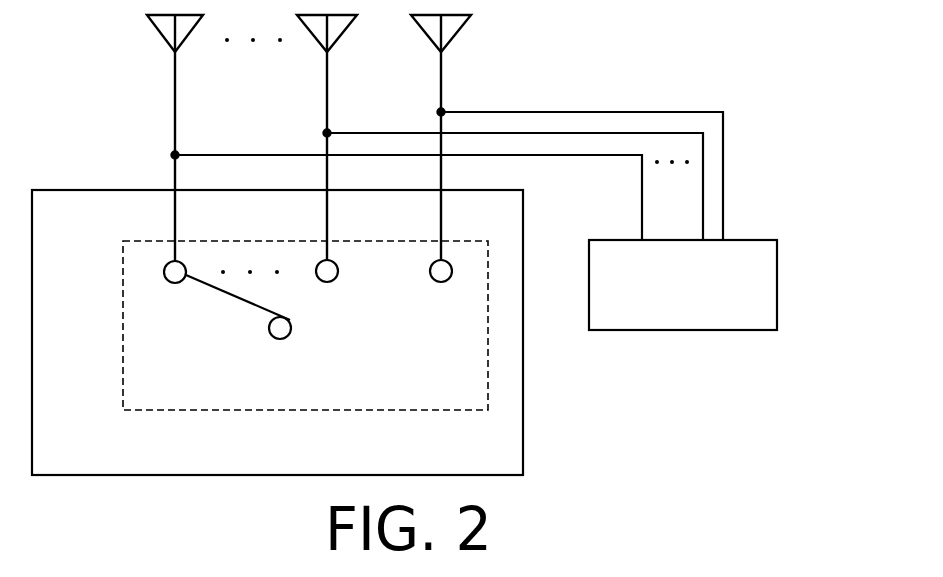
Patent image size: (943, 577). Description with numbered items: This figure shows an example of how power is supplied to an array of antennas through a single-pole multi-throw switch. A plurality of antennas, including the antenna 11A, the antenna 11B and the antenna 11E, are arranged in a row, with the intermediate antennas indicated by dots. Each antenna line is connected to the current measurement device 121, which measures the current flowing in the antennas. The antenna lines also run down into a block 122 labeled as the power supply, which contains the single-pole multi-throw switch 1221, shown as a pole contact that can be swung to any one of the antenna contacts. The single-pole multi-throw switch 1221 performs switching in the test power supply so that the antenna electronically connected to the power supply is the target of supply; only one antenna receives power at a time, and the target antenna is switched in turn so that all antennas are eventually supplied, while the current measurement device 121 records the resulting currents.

The antenna 11A is at (443, 97).
The antenna 11B is at (330, 97).
The antenna 11E is at (180, 97).
The current measurement device 121 is at (777, 282).
The virtual current calculator 122 is at (50, 190).
The single-pole multi-throw switch 1221 is at (118, 279).